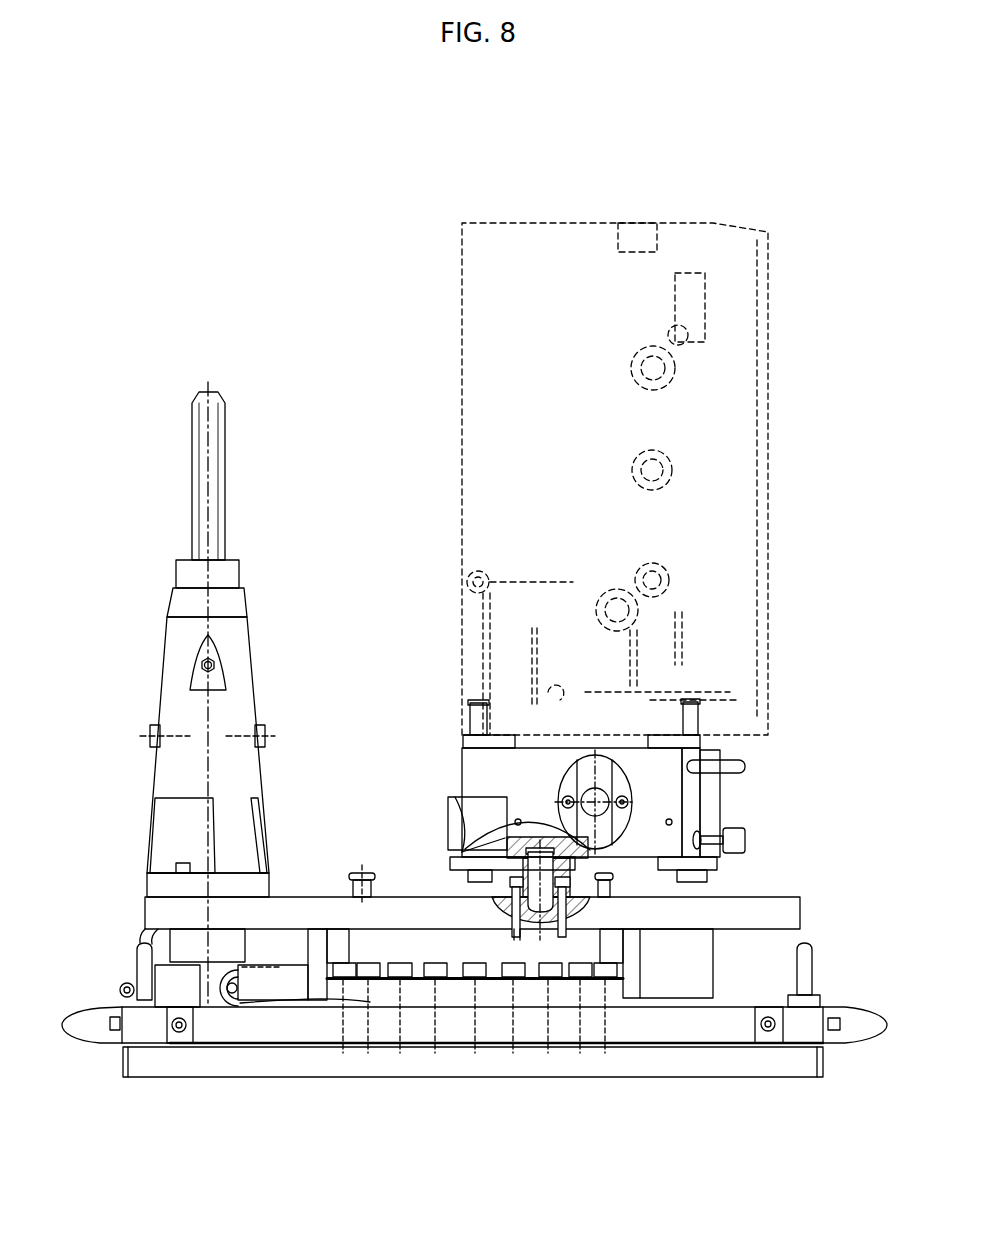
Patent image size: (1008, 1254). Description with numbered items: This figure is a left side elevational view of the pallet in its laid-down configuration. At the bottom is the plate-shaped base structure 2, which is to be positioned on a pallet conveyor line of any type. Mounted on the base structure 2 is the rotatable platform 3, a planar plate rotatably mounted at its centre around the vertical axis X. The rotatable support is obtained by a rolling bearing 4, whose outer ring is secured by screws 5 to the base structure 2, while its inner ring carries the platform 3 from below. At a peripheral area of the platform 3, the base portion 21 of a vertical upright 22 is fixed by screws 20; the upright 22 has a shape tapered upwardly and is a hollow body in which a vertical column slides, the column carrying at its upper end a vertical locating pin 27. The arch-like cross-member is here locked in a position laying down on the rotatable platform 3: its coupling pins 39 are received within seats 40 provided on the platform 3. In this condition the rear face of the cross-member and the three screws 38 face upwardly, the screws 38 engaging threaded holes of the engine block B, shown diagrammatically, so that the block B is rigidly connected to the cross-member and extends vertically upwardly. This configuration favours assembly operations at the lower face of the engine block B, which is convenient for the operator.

The base structure 2 is at (112, 1052).
The rotatable platform 3 is at (398, 893).
The rolling bearing 4 is at (380, 1045).
The screws 5 is at (468, 961).
The screws 20 is at (178, 864).
The base portions 21 is at (262, 886).
The vertical uprights 22 is at (152, 696).
The vertical locating pin 27 is at (232, 493).
The screws 38 is at (463, 702).
The coupling pins 39 is at (548, 920).
The seats 40 is at (535, 922).
The engine block B is at (462, 450).
The vertical axis X is at (467, 915).